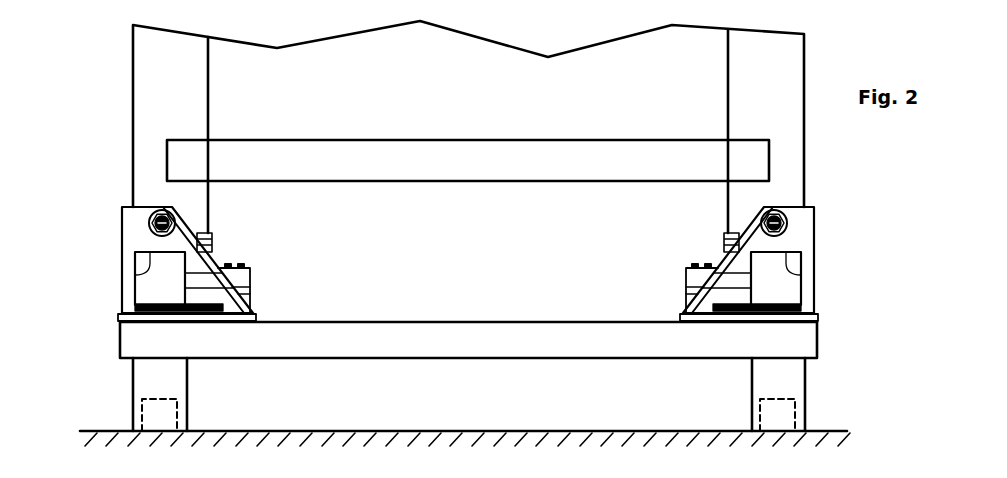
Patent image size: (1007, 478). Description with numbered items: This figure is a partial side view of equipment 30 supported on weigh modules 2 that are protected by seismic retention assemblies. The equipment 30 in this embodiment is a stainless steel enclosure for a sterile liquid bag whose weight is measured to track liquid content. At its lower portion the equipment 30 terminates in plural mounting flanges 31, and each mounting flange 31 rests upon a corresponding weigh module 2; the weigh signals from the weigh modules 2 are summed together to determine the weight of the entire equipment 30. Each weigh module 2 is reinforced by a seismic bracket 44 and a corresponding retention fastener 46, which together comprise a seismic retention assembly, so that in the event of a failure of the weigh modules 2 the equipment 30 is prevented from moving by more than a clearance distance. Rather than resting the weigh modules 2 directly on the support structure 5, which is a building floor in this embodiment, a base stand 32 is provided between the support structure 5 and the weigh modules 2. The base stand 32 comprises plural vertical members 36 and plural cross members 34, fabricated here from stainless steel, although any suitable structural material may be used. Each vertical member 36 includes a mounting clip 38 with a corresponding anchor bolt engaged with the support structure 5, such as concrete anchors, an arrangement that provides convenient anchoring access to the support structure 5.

The weigh module 2 is at (252, 282).
The support structure 5 is at (516, 430).
The equipment 30 is at (133, 93).
The mounting flange 31 is at (212, 238).
The base stand 32 is at (101, 380).
The cross member 34 is at (452, 318).
The vertical member 36 is at (187, 368).
The mounting clip 38 is at (177, 413).
The seismic bracket 44 is at (122, 238).
The retention fastener 46 is at (155, 218).